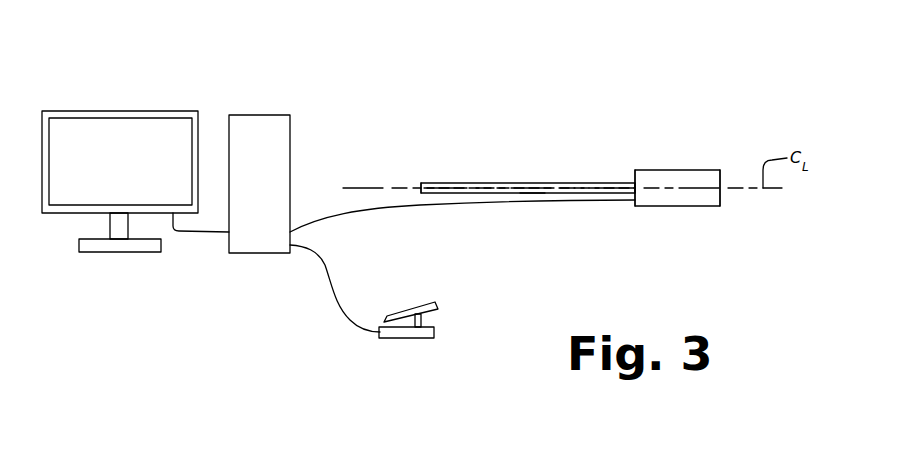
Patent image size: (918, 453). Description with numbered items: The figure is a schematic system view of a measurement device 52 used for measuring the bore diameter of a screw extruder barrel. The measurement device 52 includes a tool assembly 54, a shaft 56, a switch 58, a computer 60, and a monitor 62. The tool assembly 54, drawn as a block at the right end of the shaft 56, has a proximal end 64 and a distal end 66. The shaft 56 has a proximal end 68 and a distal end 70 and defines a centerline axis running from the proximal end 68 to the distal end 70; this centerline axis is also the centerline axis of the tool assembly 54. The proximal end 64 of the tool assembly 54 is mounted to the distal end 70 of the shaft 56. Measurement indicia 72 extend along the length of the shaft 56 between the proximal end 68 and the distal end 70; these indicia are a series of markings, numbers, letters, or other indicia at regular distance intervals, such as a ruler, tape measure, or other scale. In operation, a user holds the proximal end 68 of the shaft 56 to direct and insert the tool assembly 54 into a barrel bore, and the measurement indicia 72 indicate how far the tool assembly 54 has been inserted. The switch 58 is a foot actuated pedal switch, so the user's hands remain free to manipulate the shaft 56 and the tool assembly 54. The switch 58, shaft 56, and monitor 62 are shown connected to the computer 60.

The measurement device 52 is at (464, 78).
The tool assembly 54 is at (733, 165).
The shaft 56 is at (484, 175).
The switch 58 is at (408, 338).
The computer 60 is at (283, 115).
The monitor 62 is at (170, 117).
The proximal end of tool assembly 64 is at (639, 206).
The distal end of tool assembly 66 is at (713, 206).
The proximal end of shaft 68 is at (423, 182).
The distal end of shaft 70 is at (634, 178).
The measurement indicia 72 is at (532, 194).